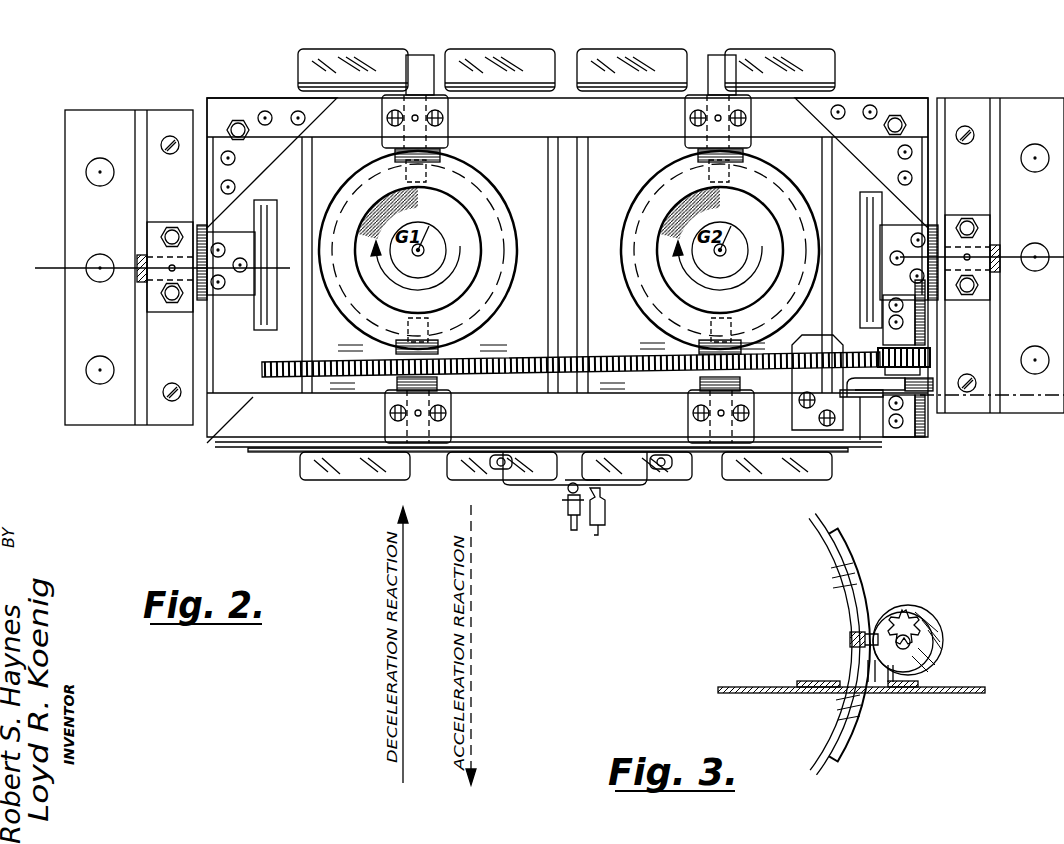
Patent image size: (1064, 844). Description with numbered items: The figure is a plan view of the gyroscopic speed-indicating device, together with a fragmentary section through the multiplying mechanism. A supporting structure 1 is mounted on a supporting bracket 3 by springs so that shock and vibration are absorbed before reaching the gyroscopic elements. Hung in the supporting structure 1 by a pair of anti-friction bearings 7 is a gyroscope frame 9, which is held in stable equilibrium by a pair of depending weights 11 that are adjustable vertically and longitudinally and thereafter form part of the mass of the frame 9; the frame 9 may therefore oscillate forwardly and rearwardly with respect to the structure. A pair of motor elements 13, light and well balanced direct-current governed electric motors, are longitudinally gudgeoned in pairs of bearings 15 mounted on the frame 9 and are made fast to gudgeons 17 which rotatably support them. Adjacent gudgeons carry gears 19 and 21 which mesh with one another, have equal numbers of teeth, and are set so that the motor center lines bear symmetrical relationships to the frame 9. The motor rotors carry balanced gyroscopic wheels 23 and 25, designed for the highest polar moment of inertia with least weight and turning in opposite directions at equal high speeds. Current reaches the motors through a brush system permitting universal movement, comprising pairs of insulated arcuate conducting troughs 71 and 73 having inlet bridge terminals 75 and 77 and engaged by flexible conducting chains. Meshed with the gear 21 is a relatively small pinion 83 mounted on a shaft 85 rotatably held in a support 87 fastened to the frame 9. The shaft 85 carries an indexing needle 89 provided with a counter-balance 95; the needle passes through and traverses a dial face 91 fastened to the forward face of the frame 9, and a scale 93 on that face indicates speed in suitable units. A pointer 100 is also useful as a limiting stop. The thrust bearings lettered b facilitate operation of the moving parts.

In FIG. 2, the supporting structure 1 is at (162, 113).
In FIG. 2, the supporting bracket 3 is at (75, 400).
In FIG. 2, the anti-friction bearings 7 is at (155, 302).
In FIG. 2, the gyroscope frame 9 is at (567, 267).
In FIG. 3, the gyroscope frame 9 is at (766, 692).
In FIG. 2, the depending weights 11 is at (290, 210).
In FIG. 2, the motor elements 13 is at (478, 185).
In FIG. 2, the bearings 15 is at (445, 140).
In FIG. 2, the gudgeons 17 is at (428, 93).
In FIG. 2, the gear 19 is at (298, 358).
In FIG. 2, the gear 21 is at (668, 362).
In FIG. 3, the gear 21 is at (850, 610).
In FIG. 2, the gyroscopic wheel 23 is at (418, 250).
In FIG. 2, the gyroscopic wheel 25 is at (720, 250).
In FIG. 2, the arcuate conducting troughs 71 is at (585, 238).
In FIG. 2, the arcuate conducting troughs 73 is at (573, 328).
In FIG. 2, the inlet bridge terminal 75 is at (640, 487).
In FIG. 2, the inlet bridge terminal 77 is at (640, 511).
In FIG. 2, the pinion 83 is at (925, 360).
In FIG. 3, the pinion 83 is at (892, 610).
In FIG. 2, the shaft 85 is at (892, 345).
In FIG. 3, the shaft 85 is at (940, 660).
In FIG. 2, the support 87 is at (920, 420).
In FIG. 2, the indexing needle 89 is at (285, 462).
In FIG. 3, the indexing needle 89 is at (848, 640).
In FIG. 2, the dial face 91 is at (225, 450).
In FIG. 2, the scale 93 is at (243, 460).
In FIG. 2, the counter-balance 95 is at (930, 385).
In FIG. 3, the counter-balance 95 is at (940, 628).
In FIG. 2, the pointer 100 is at (817, 382).
In FIG. 3, the pointer 100 is at (805, 680).